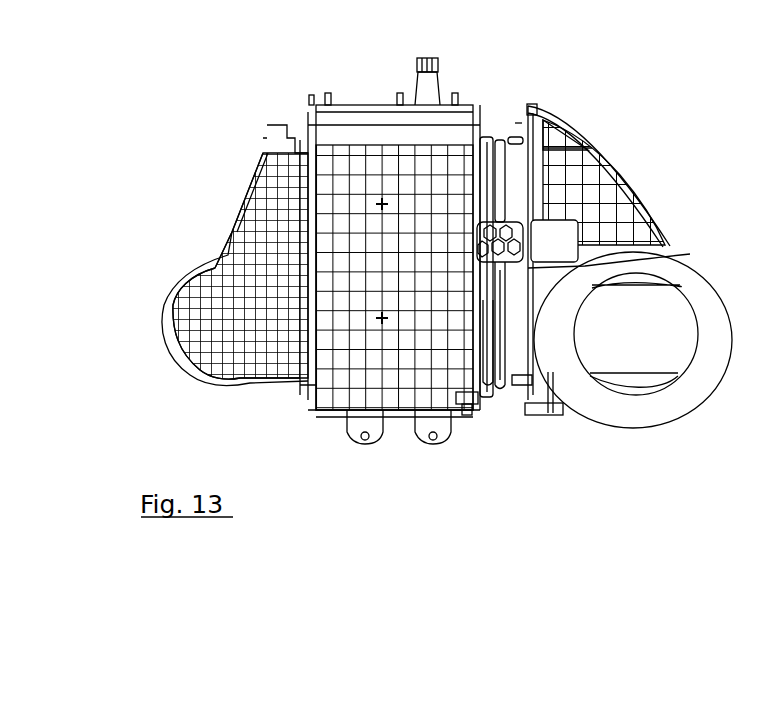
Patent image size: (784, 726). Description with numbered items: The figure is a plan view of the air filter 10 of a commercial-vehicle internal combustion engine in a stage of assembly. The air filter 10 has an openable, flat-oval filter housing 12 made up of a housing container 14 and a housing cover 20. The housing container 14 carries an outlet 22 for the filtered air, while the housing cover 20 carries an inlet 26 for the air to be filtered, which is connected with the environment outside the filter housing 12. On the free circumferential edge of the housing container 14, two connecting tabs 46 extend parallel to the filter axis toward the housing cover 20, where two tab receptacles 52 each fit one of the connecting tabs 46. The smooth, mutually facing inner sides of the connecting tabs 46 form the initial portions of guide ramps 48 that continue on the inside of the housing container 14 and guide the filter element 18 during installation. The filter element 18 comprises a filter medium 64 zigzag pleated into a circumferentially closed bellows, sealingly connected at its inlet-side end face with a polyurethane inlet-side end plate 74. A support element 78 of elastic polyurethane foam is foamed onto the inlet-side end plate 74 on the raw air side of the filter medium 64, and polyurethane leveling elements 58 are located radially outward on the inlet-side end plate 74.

The air filter 10 is at (206, 125).
The filter housing 12 is at (306, 95).
The housing container 14 is at (368, 115).
The filter element 18 is at (487, 135).
The housing cover 20 is at (630, 202).
The outlet 22 is at (182, 356).
The inlet 26 is at (670, 372).
The connecting tabs 46 is at (523, 141).
The guide ramps 48 is at (502, 370).
The tab receptacles 52 is at (562, 232).
The leveling elements 58 is at (464, 385).
The filter medium 64 is at (485, 307).
The inlet-side end plate 74 is at (505, 222).
The support element 78 is at (690, 254).